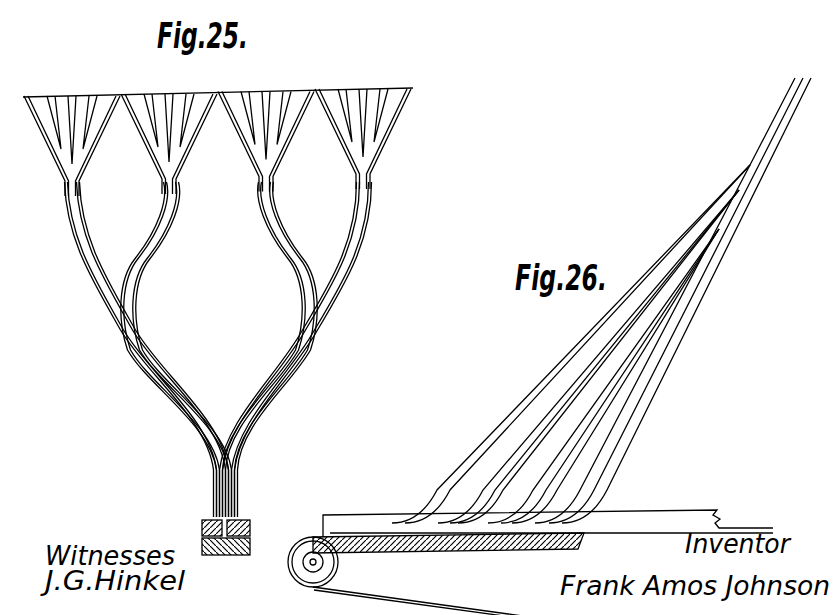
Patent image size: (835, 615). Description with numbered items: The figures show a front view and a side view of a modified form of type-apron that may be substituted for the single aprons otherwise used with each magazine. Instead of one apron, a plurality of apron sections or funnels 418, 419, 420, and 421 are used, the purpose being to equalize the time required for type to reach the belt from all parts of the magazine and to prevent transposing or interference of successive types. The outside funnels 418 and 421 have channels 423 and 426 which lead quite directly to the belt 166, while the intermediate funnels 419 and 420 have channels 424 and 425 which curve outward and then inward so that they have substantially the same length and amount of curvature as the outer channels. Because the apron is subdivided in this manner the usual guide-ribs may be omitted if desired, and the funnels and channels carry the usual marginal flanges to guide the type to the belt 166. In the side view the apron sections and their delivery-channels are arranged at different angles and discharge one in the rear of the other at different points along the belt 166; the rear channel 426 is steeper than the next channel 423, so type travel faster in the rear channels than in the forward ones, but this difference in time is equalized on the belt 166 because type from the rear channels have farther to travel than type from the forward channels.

In FIG. 25, the apron section or funnel 418 is at (87, 100).
In FIG. 25, the apron section or funnel 419 is at (162, 102).
In FIG. 25, the apron section or funnel 420 is at (280, 97).
In FIG. 25, the apron section or funnel 421 is at (373, 97).
In FIG. 25, the channel 423 is at (95, 268).
In FIG. 26, the channel 423 is at (607, 395).
In FIG. 25, the channel 424 is at (146, 270).
In FIG. 26, the channel 424 is at (580, 400).
In FIG. 25, the channel 425 is at (302, 343).
In FIG. 26, the channel 425 is at (487, 448).
In FIG. 25, the channel 426 is at (347, 258).
In FIG. 26, the channel 426 is at (628, 447).
In FIG. 25, the belt 166 is at (237, 521).
In FIG. 26, the belt 166 is at (406, 600).